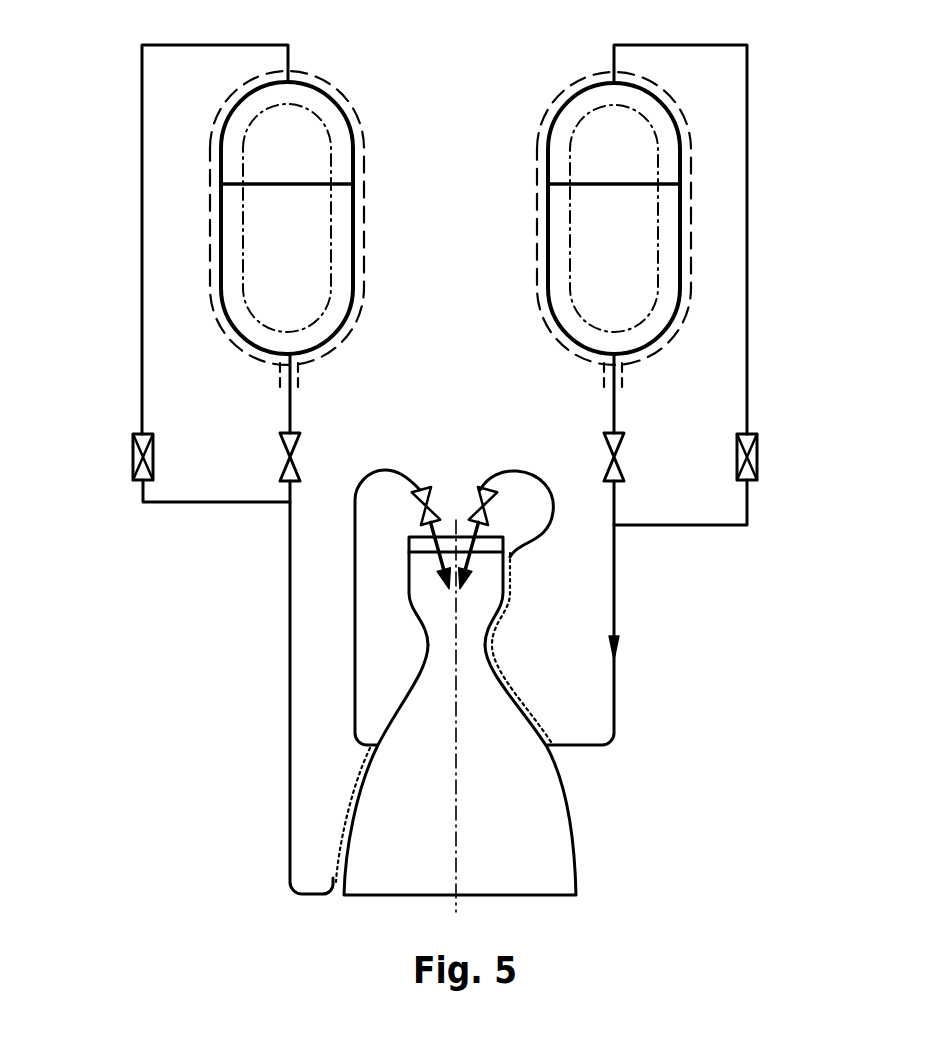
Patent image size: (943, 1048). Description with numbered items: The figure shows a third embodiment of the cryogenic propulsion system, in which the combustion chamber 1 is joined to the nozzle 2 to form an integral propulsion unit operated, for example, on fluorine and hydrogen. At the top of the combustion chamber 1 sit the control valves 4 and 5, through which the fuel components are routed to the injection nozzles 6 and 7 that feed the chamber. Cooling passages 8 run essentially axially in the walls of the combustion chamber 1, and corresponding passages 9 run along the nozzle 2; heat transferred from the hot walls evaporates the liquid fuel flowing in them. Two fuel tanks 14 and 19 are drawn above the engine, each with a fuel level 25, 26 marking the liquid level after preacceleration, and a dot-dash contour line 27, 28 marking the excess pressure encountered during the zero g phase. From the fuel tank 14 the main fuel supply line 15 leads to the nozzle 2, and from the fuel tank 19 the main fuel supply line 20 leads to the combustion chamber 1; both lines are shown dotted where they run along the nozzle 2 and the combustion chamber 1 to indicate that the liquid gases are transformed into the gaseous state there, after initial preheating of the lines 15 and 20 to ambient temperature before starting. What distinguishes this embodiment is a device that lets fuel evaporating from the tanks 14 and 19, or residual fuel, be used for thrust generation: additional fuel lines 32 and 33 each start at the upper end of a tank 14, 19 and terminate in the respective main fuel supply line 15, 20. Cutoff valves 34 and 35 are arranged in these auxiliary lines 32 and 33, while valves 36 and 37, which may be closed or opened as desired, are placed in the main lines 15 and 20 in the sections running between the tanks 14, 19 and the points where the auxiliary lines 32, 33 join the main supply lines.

The combustion chamber 1 is at (428, 638).
The nozzle 2 is at (570, 842).
The control valve 4 is at (427, 489).
The control valve 5 is at (482, 489).
The injection nozzle 6 is at (430, 542).
The injection nozzle 7 is at (483, 546).
The cooling passages 8 is at (493, 652).
The cooling passages 9 is at (341, 818).
The fuel tank 14 is at (355, 268).
The fuel supply line 15 is at (291, 636).
The fuel tank 19 is at (680, 285).
The fuel supply line 20 is at (622, 620).
The fuel level 25 is at (290, 184).
The fuel level 26 is at (616, 184).
The dot-dash contour line 27 is at (332, 152).
The dot-dash contour line 28 is at (657, 145).
The additional fuel line 32 is at (142, 265).
The additional fuel line 33 is at (747, 168).
The cutoff valve 34 is at (153, 458).
The cutoff valve 35 is at (757, 458).
The valve 36 is at (300, 457).
The valve 37 is at (625, 457).